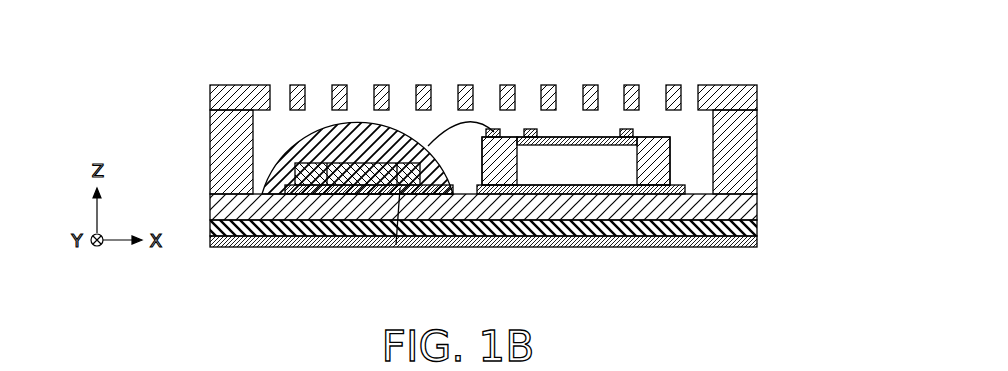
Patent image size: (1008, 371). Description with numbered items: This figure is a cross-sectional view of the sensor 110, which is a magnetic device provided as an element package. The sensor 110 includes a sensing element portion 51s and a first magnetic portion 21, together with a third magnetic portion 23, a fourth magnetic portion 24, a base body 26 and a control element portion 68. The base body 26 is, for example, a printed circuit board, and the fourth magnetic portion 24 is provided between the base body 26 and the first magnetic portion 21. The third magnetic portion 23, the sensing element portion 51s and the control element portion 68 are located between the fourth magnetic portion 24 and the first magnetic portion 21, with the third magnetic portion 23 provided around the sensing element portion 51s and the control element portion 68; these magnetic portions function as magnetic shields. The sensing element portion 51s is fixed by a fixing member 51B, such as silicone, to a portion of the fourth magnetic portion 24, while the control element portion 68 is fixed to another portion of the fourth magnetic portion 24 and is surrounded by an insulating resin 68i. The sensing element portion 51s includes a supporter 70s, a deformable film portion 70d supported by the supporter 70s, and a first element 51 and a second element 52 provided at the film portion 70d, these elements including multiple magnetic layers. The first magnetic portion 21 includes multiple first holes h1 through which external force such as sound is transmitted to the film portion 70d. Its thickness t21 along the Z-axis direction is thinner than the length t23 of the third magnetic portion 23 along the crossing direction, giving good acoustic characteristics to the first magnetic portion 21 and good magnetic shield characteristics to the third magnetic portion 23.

The sensor 110 is at (491, 167).
The first magnetic portion 21 is at (730, 92).
The thickness of the first magnetic portion t21 is at (291, 108).
The first holes h1 is at (628, 92).
The third magnetic portion 23 is at (230, 158).
The length of the third magnetic portion t23 is at (255, 128).
The fourth magnetic portion 24 is at (745, 207).
The base body 26 is at (512, 252).
The fixing member 51B is at (700, 246).
The first element 51 is at (551, 206).
The sensing element portion 51s is at (675, 288).
The second element 52 is at (528, 147).
The supporter 70s is at (498, 165).
The film portion 70d is at (581, 146).
The control element portion 68 is at (362, 165).
The insulating resin 68i is at (398, 165).